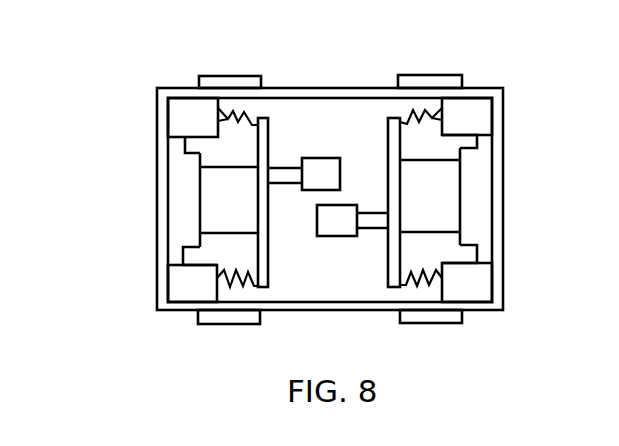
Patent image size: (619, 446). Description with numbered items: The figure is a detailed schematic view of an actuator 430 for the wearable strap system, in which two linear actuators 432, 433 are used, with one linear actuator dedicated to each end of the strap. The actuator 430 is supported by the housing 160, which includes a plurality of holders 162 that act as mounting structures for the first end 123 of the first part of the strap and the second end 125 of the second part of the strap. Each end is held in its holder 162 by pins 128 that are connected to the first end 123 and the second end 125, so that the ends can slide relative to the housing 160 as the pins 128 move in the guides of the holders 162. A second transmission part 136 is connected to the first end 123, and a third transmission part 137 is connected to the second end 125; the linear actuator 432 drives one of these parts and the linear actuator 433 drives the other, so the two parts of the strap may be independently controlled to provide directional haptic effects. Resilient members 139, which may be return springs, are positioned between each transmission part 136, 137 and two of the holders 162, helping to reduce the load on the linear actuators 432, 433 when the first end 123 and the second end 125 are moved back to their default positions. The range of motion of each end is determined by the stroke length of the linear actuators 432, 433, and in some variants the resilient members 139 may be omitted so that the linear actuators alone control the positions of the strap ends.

The actuator 430 is at (124, 72).
The housing 160 is at (502, 87).
The holders 162 is at (178, 115).
The pins 128 is at (187, 152).
The first end 123 is at (183, 205).
The second end 125 is at (480, 198).
The second transmission part 136 is at (271, 222).
The third transmission part 137 is at (388, 238).
The resilient members 139 is at (222, 112).
The linear actuator 432 is at (318, 146).
The linear actuator 433 is at (324, 250).